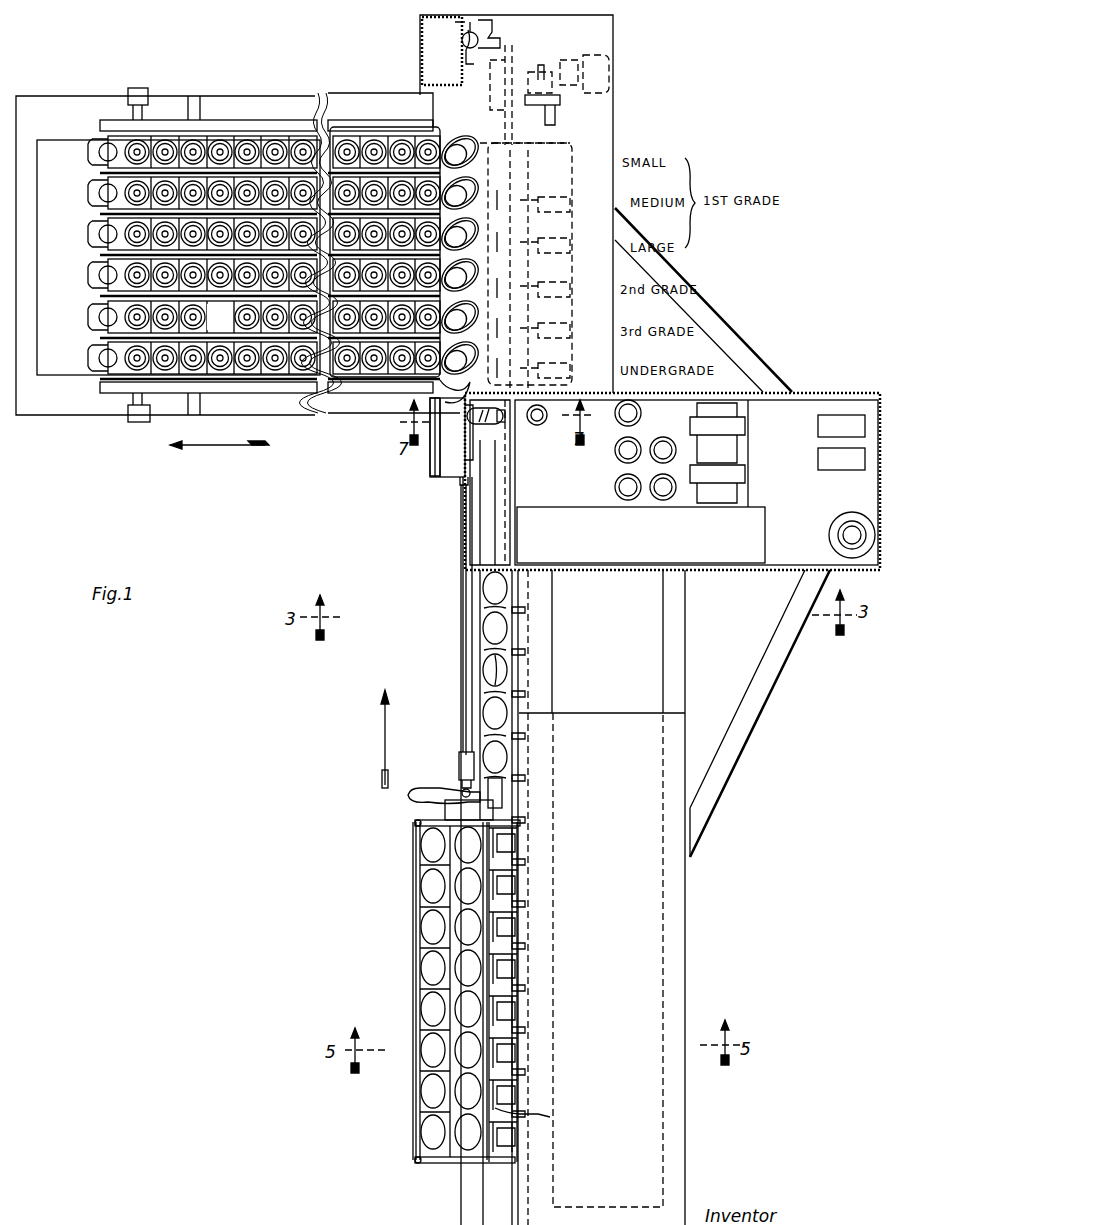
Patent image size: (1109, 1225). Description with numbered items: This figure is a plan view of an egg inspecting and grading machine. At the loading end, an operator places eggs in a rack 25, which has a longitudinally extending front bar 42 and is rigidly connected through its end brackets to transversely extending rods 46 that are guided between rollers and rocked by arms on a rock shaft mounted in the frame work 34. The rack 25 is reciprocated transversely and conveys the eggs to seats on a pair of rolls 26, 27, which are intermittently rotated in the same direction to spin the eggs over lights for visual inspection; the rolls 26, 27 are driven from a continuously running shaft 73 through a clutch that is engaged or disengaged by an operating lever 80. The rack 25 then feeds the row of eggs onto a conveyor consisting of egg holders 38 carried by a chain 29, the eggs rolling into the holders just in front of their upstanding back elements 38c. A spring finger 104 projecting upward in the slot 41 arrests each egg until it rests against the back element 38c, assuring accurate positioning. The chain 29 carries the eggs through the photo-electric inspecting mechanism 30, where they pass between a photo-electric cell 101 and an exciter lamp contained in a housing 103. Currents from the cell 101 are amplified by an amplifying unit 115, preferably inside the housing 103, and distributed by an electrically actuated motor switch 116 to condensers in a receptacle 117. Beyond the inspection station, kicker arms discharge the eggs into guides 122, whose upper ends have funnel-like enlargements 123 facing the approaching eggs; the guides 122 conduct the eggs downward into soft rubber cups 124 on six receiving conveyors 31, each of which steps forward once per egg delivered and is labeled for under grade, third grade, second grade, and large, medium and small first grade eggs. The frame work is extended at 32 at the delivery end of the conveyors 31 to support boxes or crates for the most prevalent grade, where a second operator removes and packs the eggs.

The frame work extension 32 is at (43, 420).
The rubber cups 124 is at (240, 140).
The receiving conveyors 31 is at (100, 200).
The guides 122 is at (471, 132).
The funnel-like enlargements 123 is at (436, 422).
The inspecting mechanism 30 is at (445, 465).
The housing 103 is at (460, 508).
The photo-electric cell 101 is at (495, 430).
The amplifying unit 115 is at (688, 406).
The motor switch 116 is at (830, 461).
The receptacle 117 is at (755, 538).
The frame work 34 is at (543, 611).
The chain 29 is at (520, 680).
The spring finger 104 is at (490, 672).
The shaft 73 is at (465, 661).
The operating lever 80 is at (424, 796).
The rods 46 is at (427, 820).
The rack 25 is at (413, 940).
The roll 26 is at (435, 982).
The roll 27 is at (445, 1001).
The slot 41 is at (425, 1080).
The front bar 42 is at (418, 1128).
The egg holders 38 is at (511, 915).
The upstanding back elements 38c is at (548, 1119).